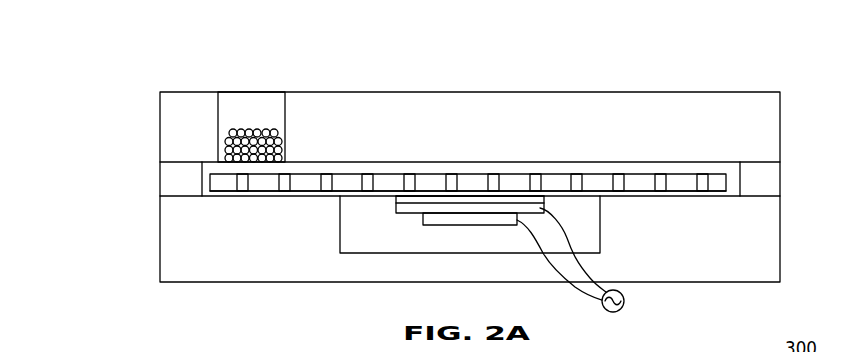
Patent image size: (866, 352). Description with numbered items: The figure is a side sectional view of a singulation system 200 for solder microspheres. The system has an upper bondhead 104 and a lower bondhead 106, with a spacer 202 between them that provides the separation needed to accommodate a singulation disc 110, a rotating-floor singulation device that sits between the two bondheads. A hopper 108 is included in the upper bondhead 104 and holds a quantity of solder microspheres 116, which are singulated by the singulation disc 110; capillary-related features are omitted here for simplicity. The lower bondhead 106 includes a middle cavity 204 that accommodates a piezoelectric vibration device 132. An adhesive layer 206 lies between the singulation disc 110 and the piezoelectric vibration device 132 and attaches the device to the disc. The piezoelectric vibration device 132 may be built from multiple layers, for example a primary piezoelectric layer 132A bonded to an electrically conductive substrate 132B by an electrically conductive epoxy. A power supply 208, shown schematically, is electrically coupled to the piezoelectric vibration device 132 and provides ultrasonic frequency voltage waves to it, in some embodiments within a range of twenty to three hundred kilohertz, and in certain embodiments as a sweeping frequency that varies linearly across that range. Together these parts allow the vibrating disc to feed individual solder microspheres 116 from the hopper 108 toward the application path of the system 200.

The singulation system 200 is at (764, 49).
The upper bondhead 104 is at (765, 122).
The lower bondhead 106 is at (763, 248).
The spacer 202 is at (765, 178).
The singulation disc 110 is at (307, 180).
The adhesive layer 206 is at (438, 196).
The hopper 108 is at (218, 112).
The solder microsphere 116 is at (248, 130).
The piezoelectric vibration device 132 is at (400, 225).
The primary piezoelectric layer 132A is at (397, 210).
The electrically conductive substrate 132B is at (403, 197).
The cavity 204 is at (525, 232).
The power supply 208 is at (624, 303).